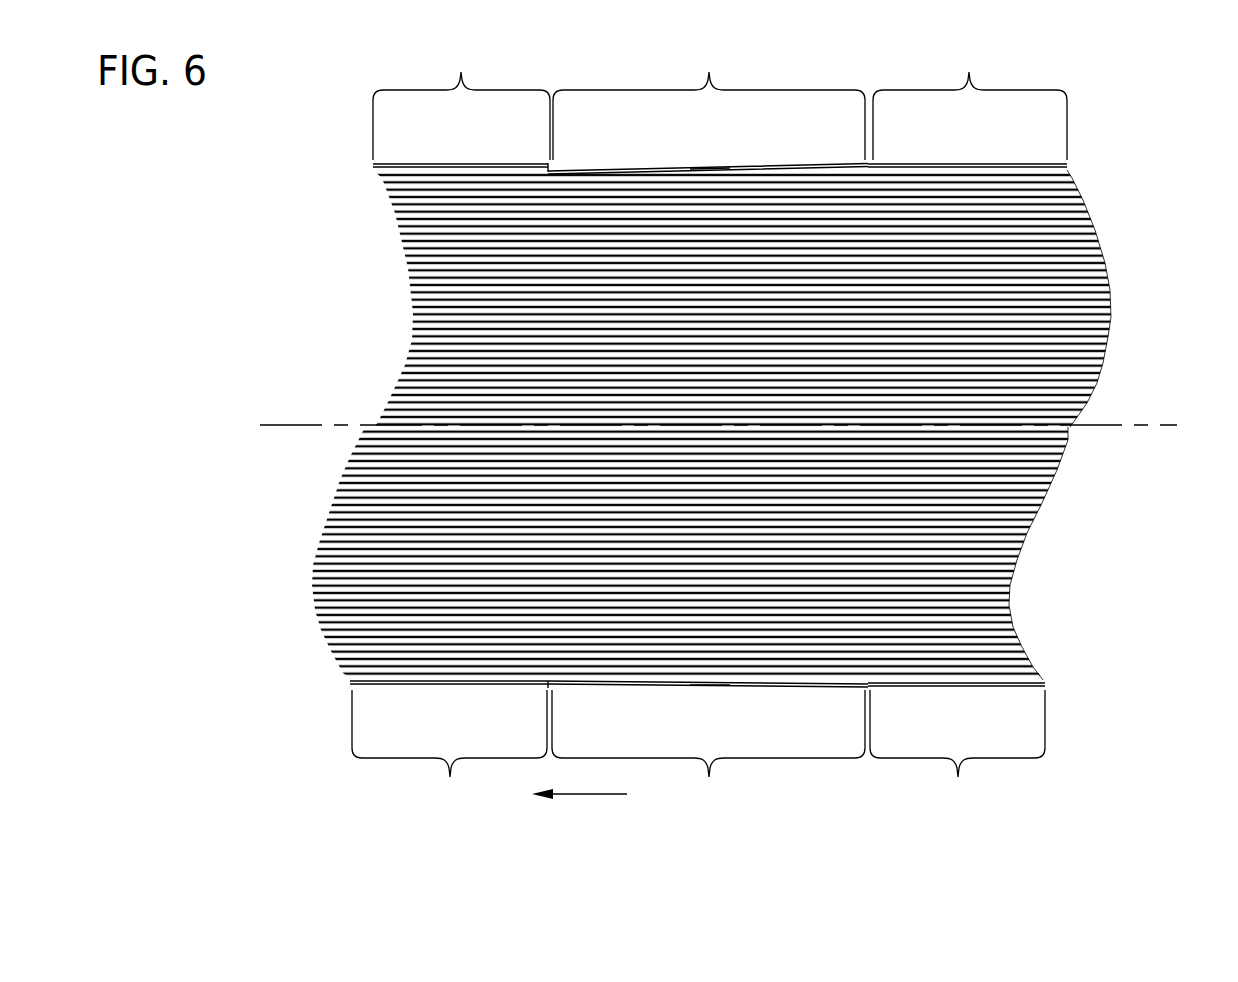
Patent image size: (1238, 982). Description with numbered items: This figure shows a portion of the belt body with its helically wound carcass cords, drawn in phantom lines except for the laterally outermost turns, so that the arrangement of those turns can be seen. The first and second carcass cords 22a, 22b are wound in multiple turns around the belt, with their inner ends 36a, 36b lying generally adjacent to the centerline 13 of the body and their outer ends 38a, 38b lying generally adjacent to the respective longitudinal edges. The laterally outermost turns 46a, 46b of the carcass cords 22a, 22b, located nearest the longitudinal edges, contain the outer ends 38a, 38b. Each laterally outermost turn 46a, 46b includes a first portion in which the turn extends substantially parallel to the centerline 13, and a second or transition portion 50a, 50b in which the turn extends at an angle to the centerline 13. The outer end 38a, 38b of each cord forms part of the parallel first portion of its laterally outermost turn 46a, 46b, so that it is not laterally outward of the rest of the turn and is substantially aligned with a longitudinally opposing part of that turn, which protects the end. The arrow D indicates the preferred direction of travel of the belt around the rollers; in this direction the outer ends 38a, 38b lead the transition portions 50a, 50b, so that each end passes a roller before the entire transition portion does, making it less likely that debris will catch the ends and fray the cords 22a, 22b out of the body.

The centerline 13 is at (304, 425).
The first carcass cord 22a is at (332, 505).
The second carcass cord 22b is at (408, 268).
The inner end of first carcass cord 36a is at (878, 428).
The inner end of second carcass cord 36b is at (878, 424).
The outer end of first carcass cord 38a is at (552, 683).
The outer end of second carcass cord 38b is at (550, 172).
The laterally outermost turn of first carcass cord 46a is at (710, 684).
The laterally outermost turn of second carcass cord 46b is at (712, 173).
The second portion of laterally outermost turn 50a is at (708, 745).
The second portion of laterally outermost turn 50b is at (708, 107).
The direction of travel arrow D is at (577, 797).